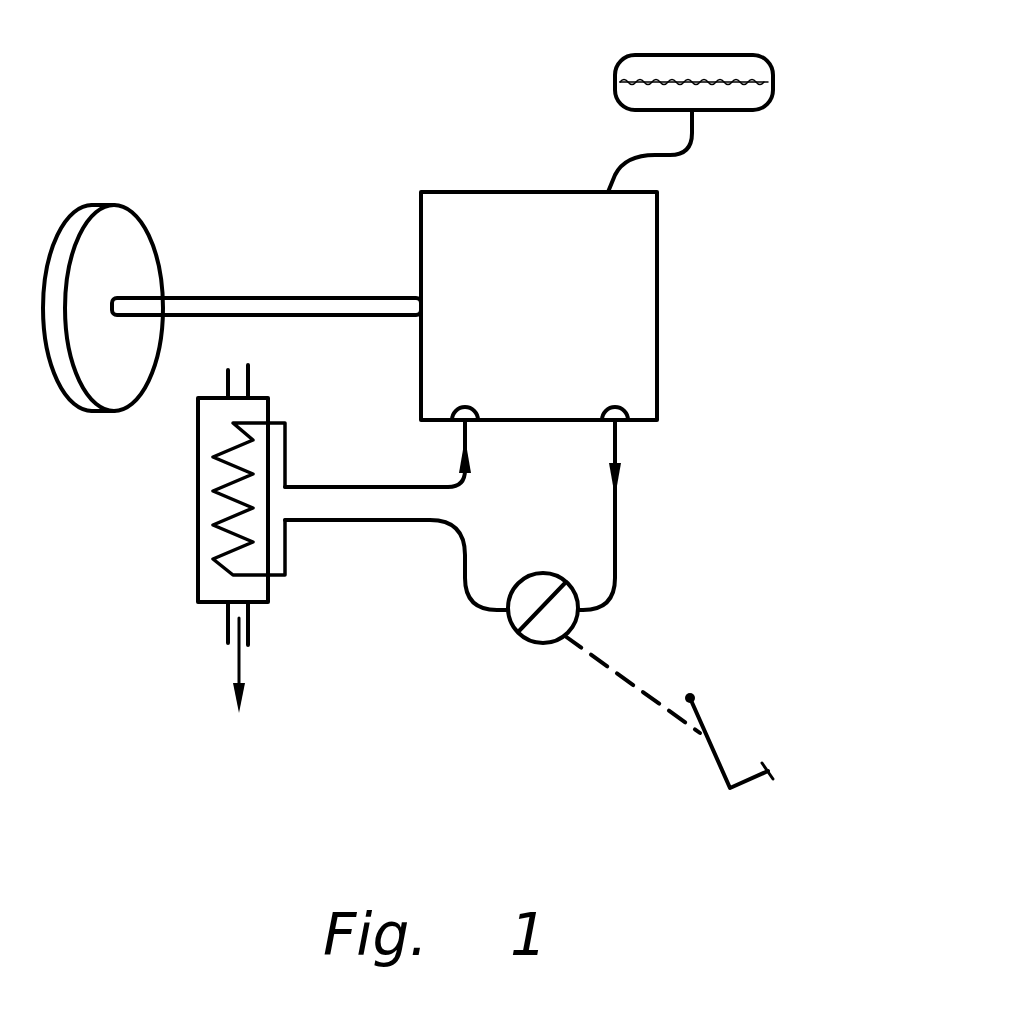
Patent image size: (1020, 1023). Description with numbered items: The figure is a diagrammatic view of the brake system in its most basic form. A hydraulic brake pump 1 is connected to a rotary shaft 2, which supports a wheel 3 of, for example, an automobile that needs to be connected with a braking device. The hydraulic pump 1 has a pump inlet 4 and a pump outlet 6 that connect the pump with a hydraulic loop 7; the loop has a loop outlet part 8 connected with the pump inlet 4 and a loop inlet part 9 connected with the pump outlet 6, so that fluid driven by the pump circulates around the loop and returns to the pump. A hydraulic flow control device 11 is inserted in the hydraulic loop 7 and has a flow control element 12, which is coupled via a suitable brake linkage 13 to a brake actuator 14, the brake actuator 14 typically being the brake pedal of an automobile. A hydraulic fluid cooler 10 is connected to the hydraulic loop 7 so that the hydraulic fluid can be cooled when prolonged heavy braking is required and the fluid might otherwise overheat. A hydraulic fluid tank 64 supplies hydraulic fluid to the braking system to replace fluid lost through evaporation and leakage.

The hydraulic brake pump 1 is at (605, 312).
The rotary shaft 2 is at (298, 297).
The wheel 3 is at (102, 412).
The pump inlet 4 is at (462, 450).
The pump outlet 6 is at (620, 478).
The hydraulic loop 7 is at (463, 573).
The loop outlet part 8 is at (450, 480).
The loop inlet part 9 is at (617, 560).
The hydraulic fluid cooler 10 is at (220, 518).
The hydraulic flow control device 11 is at (547, 643).
The flow control element 12 is at (523, 620).
The brake linkage 13 is at (637, 690).
The brake actuator 14 is at (708, 735).
The hydraulic fluid tank 64 is at (617, 97).